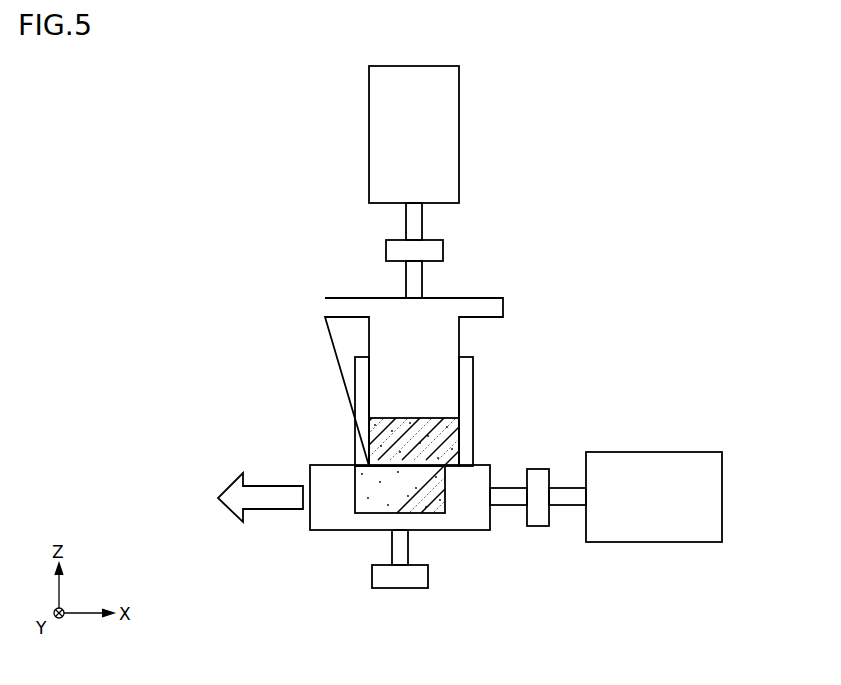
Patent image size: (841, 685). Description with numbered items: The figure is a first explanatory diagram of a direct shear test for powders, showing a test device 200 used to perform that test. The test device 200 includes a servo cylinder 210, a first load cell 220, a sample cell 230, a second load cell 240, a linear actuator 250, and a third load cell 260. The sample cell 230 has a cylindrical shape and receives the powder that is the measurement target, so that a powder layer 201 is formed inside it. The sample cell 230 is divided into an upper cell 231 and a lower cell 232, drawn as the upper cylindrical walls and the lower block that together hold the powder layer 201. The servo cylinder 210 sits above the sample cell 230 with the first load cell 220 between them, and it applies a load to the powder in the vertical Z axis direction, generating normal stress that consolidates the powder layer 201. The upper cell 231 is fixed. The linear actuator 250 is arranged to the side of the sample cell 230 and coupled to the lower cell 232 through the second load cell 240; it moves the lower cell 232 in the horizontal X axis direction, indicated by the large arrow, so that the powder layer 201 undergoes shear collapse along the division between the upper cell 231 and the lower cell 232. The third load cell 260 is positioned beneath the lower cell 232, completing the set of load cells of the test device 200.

The test device 200 is at (232, 80).
The powder layer 201 is at (366, 503).
The servo cylinder 210 is at (459, 128).
The first load cell 220 is at (443, 253).
The sample cell 230 is at (255, 372).
The upper cell 231 is at (355, 383).
The lower cell 232 is at (345, 465).
The second load cell 240 is at (542, 469).
The linear actuator 250 is at (668, 452).
The third load cell 260 is at (430, 577).